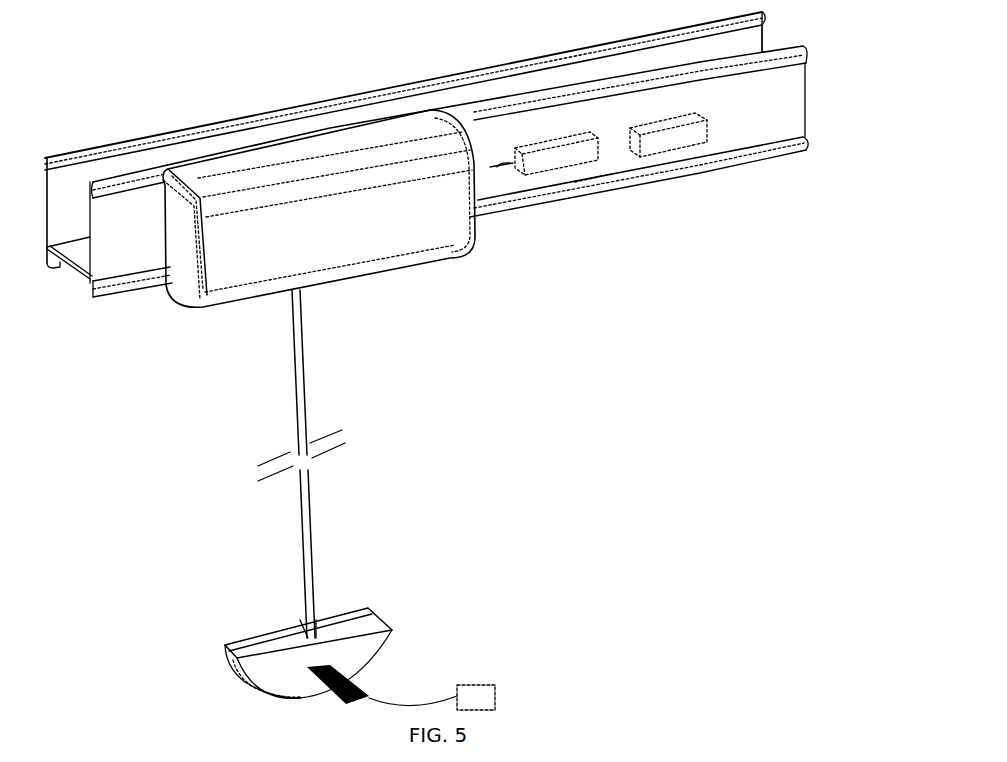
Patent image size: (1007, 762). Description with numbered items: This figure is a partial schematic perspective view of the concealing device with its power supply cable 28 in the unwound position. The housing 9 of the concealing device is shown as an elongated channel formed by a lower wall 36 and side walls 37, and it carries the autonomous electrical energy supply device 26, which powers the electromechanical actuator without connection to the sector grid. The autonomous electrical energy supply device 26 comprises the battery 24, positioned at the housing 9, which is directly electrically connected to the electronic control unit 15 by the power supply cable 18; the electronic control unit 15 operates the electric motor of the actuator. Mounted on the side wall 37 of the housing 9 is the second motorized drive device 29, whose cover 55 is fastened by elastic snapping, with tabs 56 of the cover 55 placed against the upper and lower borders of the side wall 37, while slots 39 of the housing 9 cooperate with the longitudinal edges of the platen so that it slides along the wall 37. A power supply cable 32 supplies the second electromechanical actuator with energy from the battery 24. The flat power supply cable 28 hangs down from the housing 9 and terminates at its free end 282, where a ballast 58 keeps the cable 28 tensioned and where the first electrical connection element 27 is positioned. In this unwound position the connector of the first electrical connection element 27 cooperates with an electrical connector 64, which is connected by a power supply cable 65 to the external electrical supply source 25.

The housing 9 is at (423, 68).
The electronic control unit 15 is at (670, 147).
The power supply cable 18 is at (607, 153).
The battery 24 is at (560, 163).
The external electrical supply source 25 is at (480, 697).
The autonomous electrical energy supply device 26 is at (592, 173).
The first electrical connection element 27 is at (322, 666).
The power supply cable 28 is at (303, 355).
The second motorized drive device 29 is at (307, 166).
The power supply cable 32 is at (497, 168).
The lower wall 36 is at (78, 270).
The side wall 37 is at (107, 172).
The slots 39 is at (93, 204).
The cover 55 is at (190, 277).
The tabs 56 is at (168, 186).
The ballast 58 is at (280, 664).
The electrical connector 64 is at (310, 694).
The power supply cable 65 is at (408, 703).
The free end 282 is at (298, 628).